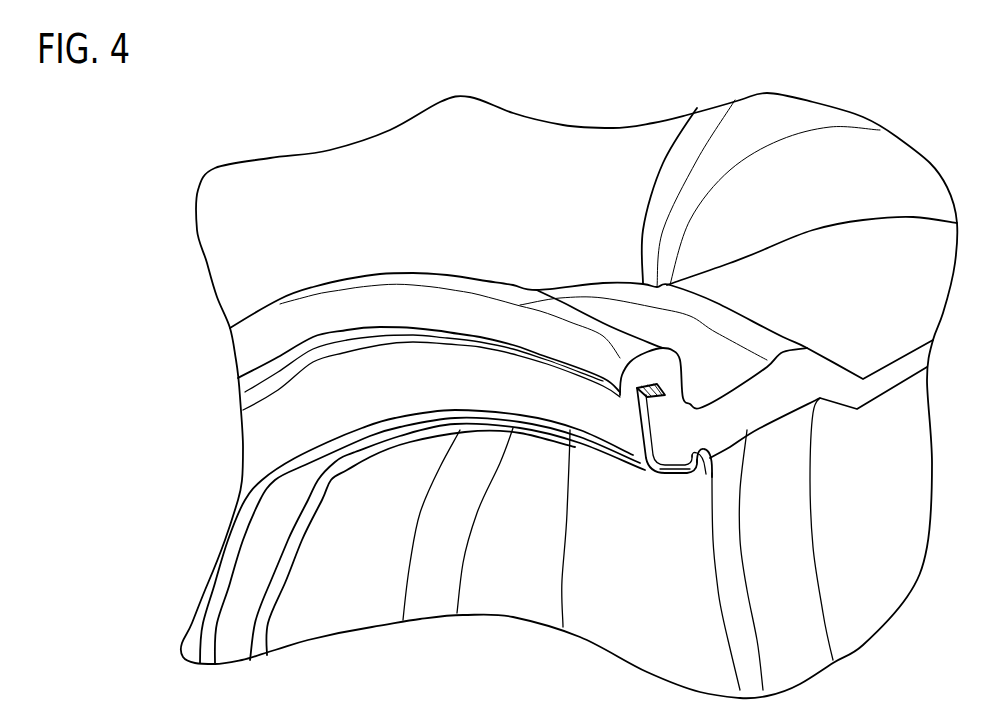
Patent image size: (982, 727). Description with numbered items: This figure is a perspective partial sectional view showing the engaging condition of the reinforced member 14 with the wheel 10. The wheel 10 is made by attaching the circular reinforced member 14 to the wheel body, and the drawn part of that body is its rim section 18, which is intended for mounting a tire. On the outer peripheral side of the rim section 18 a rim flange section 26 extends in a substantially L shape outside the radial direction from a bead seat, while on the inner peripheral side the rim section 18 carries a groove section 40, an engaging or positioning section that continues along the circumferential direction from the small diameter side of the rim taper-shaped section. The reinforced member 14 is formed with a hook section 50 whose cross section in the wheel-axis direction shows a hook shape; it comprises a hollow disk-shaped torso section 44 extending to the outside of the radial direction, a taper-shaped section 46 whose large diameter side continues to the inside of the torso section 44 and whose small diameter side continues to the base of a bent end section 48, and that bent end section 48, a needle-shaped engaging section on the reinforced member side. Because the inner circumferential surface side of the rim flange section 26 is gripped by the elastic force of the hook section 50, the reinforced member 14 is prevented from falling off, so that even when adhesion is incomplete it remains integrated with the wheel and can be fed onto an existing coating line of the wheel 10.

The wheel 10 is at (392, 211).
The reinforced member 14 is at (263, 562).
The rim section 18 is at (803, 392).
The rim flange section 26 is at (483, 310).
The groove section 40 is at (297, 533).
The torso section 44 is at (653, 443).
The taper-shaped section 46 is at (677, 473).
The bent end section 48 is at (713, 475).
The hook section 50 is at (540, 434).